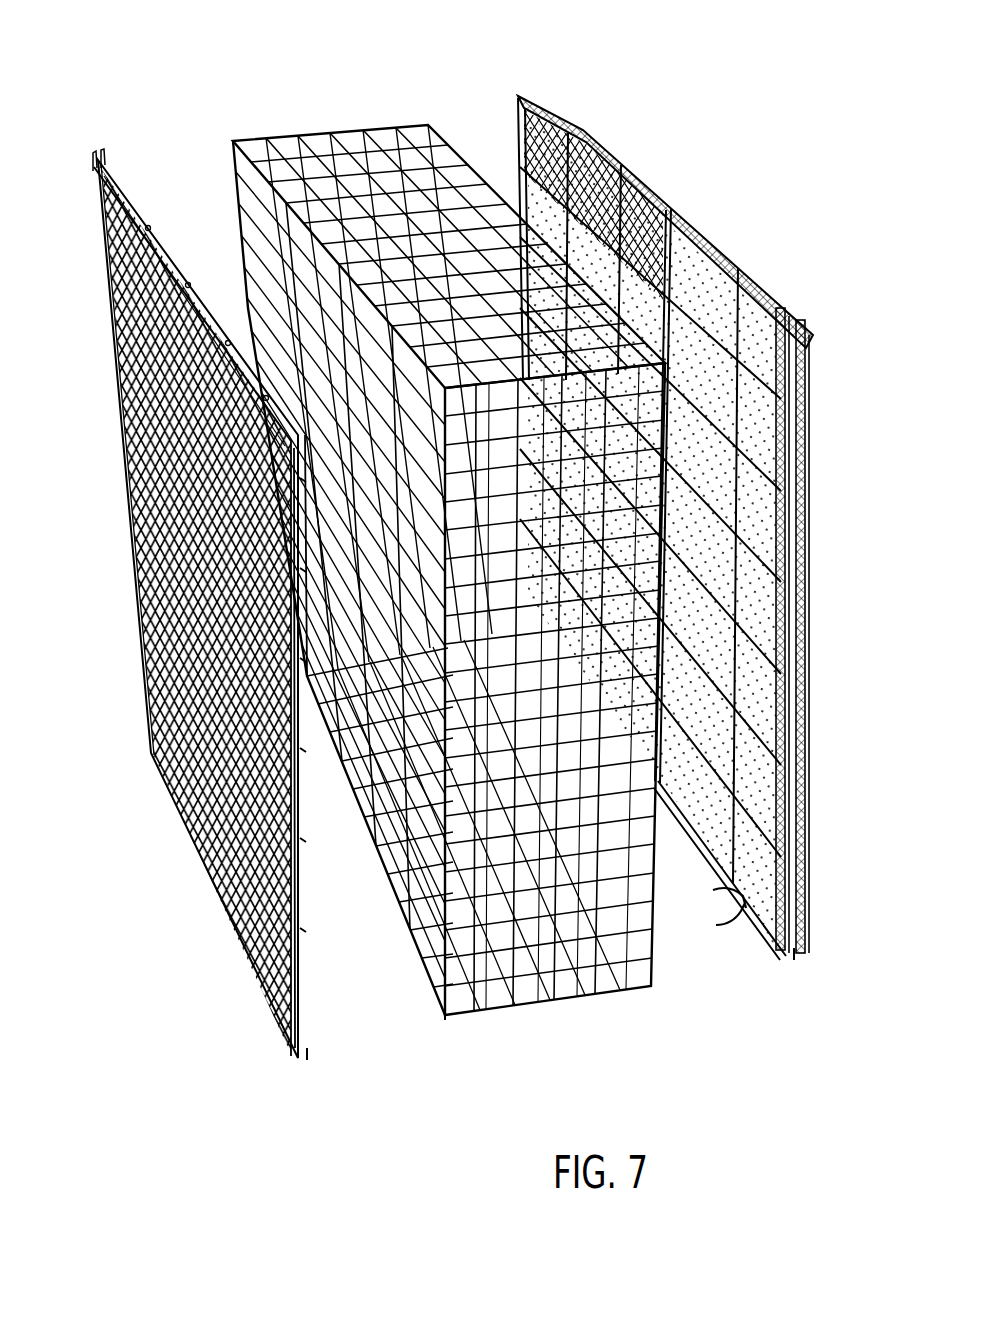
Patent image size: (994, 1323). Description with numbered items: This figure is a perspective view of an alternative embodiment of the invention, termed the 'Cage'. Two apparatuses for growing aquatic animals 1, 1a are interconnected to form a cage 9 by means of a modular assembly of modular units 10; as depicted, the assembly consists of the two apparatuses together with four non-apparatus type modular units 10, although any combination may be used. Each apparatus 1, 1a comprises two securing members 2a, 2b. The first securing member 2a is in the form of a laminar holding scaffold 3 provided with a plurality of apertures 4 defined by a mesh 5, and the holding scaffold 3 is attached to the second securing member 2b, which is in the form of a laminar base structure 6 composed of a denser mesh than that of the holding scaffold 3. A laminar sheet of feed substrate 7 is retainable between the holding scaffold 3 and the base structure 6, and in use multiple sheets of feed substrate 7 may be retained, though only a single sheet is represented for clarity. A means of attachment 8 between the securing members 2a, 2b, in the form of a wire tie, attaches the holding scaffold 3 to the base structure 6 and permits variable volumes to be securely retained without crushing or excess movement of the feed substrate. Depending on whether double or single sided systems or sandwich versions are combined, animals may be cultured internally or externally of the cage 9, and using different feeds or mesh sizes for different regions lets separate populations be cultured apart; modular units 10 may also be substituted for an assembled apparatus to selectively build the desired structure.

The apparatus for growing aquatic animals 1 is at (105, 422).
The apparatus for growing aquatic animals 1a is at (818, 502).
The first securing member 2a is at (137, 180).
The second securing member 2b is at (90, 142).
The laminar holding scaffold 3 is at (503, 150).
The apertures 4 is at (167, 227).
The mesh 5 is at (307, 963).
The laminar base structure 6 is at (253, 907).
The laminar sheet of feed substrate 7 is at (765, 578).
The means of attachment 8 is at (732, 917).
The cage 9 is at (413, 80).
The modular units 10 is at (455, 1020).